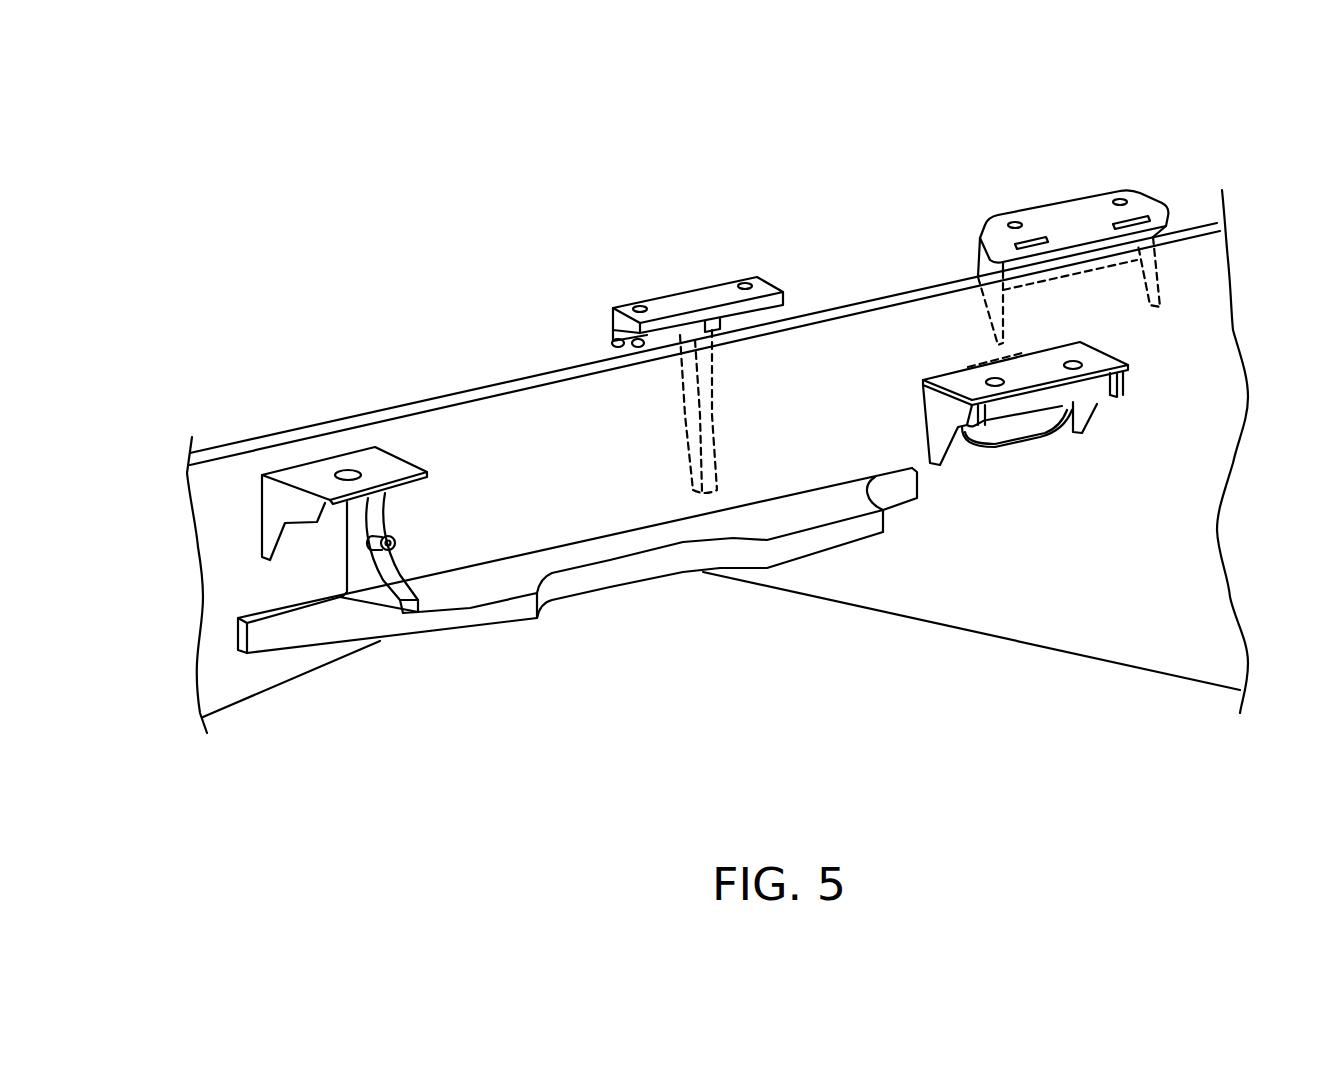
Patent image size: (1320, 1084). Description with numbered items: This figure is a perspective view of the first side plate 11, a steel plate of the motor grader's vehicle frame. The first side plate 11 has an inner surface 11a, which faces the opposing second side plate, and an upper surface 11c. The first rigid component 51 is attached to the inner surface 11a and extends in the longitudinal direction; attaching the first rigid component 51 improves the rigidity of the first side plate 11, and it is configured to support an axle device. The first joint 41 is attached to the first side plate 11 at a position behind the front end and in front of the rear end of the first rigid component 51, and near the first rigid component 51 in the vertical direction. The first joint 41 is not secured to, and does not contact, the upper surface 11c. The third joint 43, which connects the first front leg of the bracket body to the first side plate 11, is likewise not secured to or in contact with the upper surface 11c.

The first side plate 11 is at (455, 378).
The inner surface 11a is at (978, 602).
The upper surface 11c is at (887, 298).
The first joint 41 is at (688, 286).
The third joint 43 is at (1042, 206).
The first rigid component 51 is at (638, 572).